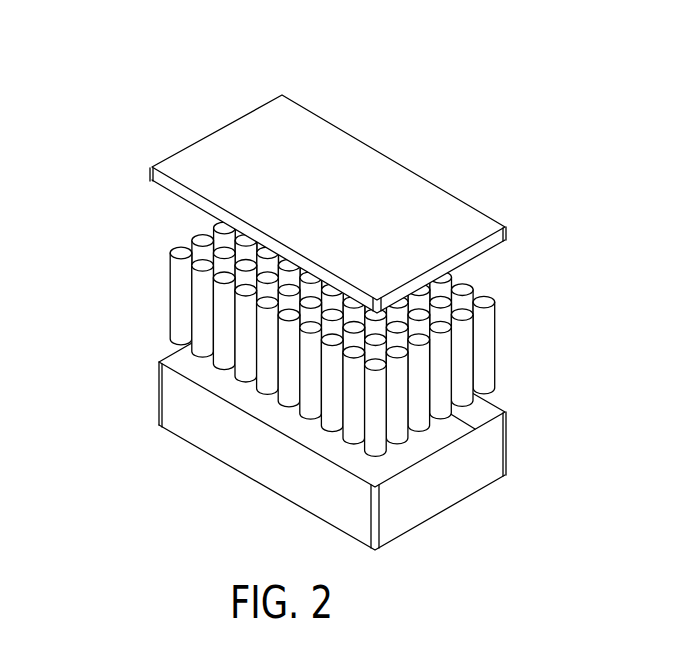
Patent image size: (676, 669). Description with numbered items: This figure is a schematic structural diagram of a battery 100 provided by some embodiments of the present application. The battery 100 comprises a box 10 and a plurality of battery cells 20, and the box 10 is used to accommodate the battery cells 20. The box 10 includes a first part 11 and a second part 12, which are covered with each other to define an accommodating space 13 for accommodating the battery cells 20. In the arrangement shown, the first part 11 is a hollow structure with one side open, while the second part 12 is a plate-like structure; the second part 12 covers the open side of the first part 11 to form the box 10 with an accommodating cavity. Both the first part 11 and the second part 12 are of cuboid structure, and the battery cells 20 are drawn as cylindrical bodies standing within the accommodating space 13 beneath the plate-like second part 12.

The battery 100 is at (301, 275).
The box 10 is at (301, 322).
The first part 11 is at (331, 418).
The second part 12 is at (310, 204).
The accommodating space 13 is at (445, 430).
The battery cell 20 is at (485, 344).